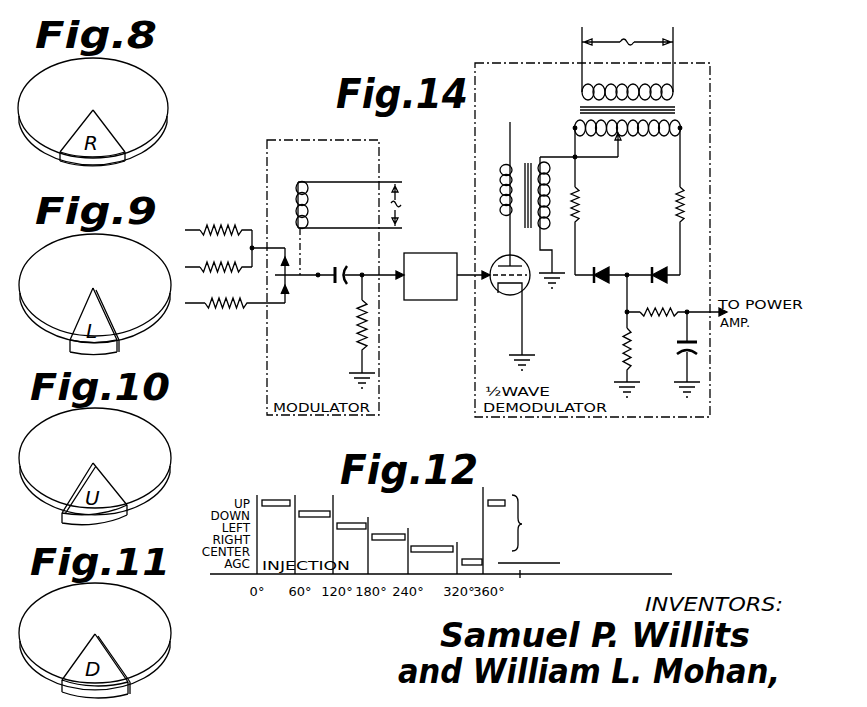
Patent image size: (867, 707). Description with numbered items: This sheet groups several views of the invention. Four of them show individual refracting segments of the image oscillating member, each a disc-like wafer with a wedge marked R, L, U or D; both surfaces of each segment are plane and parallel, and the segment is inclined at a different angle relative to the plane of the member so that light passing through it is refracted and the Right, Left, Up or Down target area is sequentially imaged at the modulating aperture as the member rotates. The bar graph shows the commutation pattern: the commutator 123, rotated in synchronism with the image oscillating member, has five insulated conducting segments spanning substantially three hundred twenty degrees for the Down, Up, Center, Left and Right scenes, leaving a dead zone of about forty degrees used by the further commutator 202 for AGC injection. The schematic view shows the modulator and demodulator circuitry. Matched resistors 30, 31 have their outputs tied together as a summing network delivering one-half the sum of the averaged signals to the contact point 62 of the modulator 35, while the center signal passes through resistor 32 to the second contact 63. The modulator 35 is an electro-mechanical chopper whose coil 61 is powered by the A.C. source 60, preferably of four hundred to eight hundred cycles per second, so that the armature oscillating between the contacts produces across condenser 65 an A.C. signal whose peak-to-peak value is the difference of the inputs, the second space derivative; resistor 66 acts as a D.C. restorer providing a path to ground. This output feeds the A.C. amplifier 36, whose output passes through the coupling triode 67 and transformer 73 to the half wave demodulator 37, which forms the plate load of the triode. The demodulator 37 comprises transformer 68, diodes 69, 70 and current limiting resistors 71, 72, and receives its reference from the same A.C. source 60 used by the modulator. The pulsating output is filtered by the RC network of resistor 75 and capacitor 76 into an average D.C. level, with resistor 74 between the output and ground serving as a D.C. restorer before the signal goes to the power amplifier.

In FIG. 14, the matched resistor 30 is at (216, 263).
In FIG. 14, the matched resistor 31 is at (217, 226).
In FIG. 14, the matched resistor 32 is at (221, 309).
In FIG. 14, the modulator 35 is at (267, 370).
In FIG. 14, the A.C. amplifier 36 is at (428, 253).
In FIG. 14, the half wave demodulator 37 is at (711, 186).
In FIG. 14, the A.C. source 60 is at (402, 204).
In FIG. 14, the coil 61 is at (297, 189).
In FIG. 14, the contact point 62 is at (289, 262).
In FIG. 14, the second contact 63 is at (287, 289).
In FIG. 14, the condenser 65 is at (343, 267).
In FIG. 14, the resistor 66 is at (357, 334).
In FIG. 14, the coupling triode 67 is at (505, 294).
In FIG. 14, the transformer 68 is at (576, 107).
In FIG. 14, the diode 69 is at (603, 268).
In FIG. 14, the diode 70 is at (659, 267).
In FIG. 14, the current limiting resistor 71 is at (581, 205).
In FIG. 14, the current limiting resistor 72 is at (676, 203).
In FIG. 14, the transformer 73 is at (531, 157).
In FIG. 14, the resistor 74 is at (622, 346).
In FIG. 14, the resistor 75 is at (667, 309).
In FIG. 14, the capacitor 76 is at (680, 346).
In FIG. 12, the commutator 123 is at (595, 523).
In FIG. 12, the commutator 202 is at (608, 566).